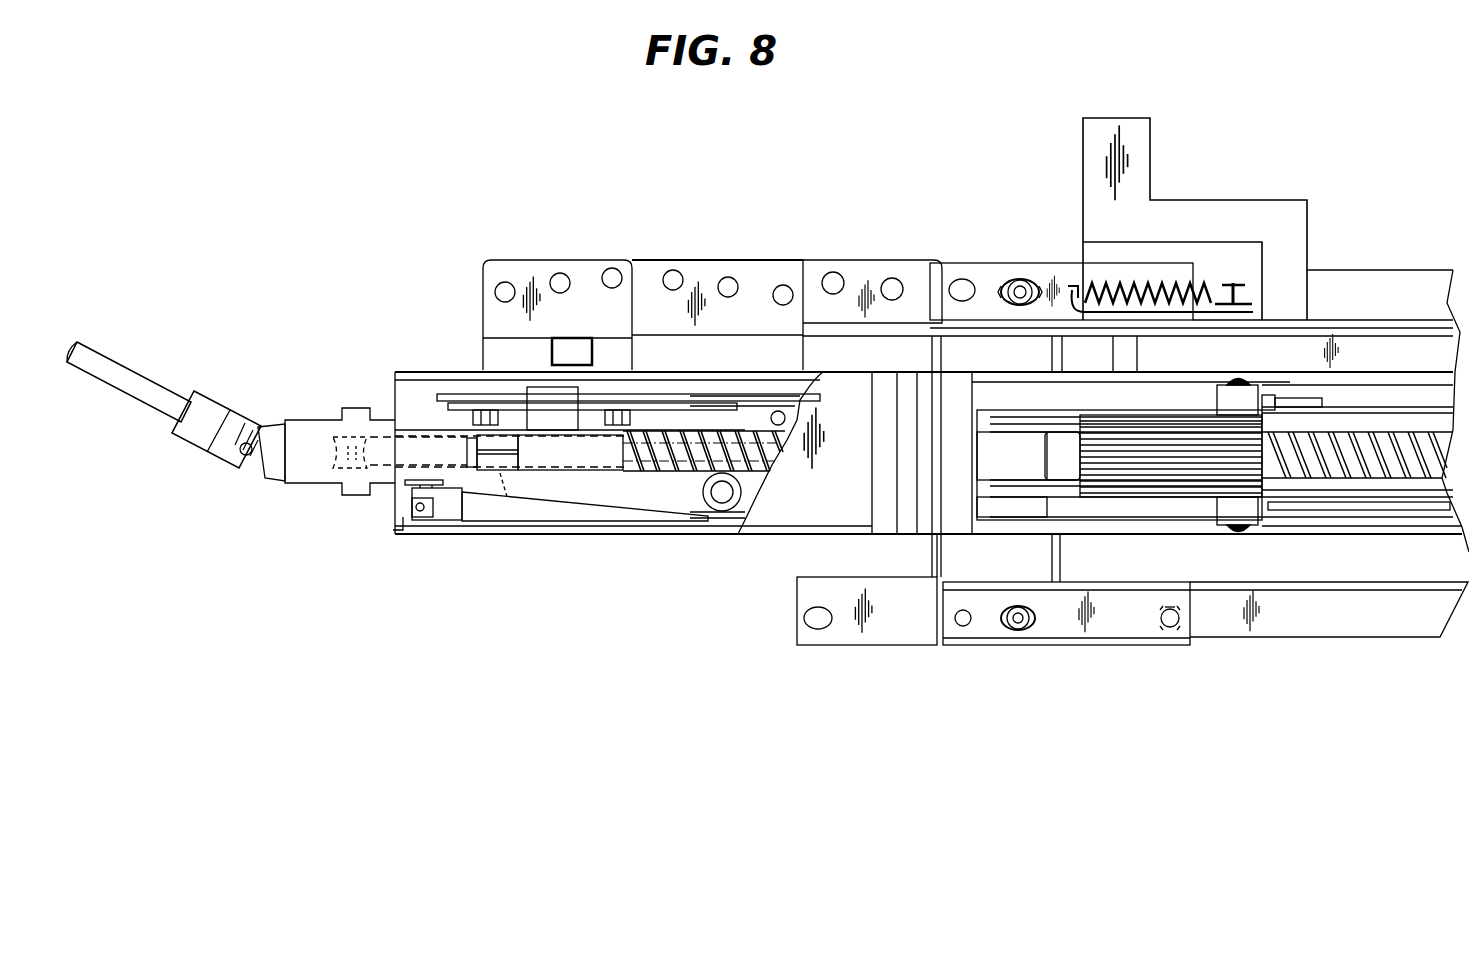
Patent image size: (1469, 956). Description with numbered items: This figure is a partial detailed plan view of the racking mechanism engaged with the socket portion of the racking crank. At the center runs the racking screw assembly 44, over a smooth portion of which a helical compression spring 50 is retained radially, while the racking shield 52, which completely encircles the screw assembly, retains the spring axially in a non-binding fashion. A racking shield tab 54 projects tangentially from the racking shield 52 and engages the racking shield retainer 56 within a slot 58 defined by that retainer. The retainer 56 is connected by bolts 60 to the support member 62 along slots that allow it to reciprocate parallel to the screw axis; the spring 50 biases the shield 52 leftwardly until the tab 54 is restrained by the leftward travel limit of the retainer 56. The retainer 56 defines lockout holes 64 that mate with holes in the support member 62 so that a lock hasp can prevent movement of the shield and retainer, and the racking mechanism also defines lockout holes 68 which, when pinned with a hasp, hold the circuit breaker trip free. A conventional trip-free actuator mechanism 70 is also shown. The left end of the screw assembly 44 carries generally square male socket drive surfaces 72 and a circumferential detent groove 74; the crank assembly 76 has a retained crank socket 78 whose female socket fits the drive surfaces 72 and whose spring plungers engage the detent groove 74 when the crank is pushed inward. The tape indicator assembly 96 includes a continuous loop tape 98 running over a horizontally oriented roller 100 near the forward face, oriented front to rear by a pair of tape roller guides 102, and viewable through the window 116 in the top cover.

The racking screw assembly 44 is at (1312, 498).
The helical compression spring 50 is at (646, 474).
The racking shield 52 is at (557, 464).
The racking shield tab 54 is at (570, 452).
The racking shield retainer 56 is at (486, 358).
The slot 58 is at (520, 407).
The bolts 60 is at (628, 412).
The support member 62 is at (637, 396).
The lockout holes 64 is at (612, 268).
The lockout holes 68 is at (728, 277).
The trip-free actuator mechanism 70 is at (1417, 102).
The male socket drive surfaces 72 is at (585, 497).
The detent groove 74 is at (337, 480).
The crank assembly 76 is at (176, 450).
The crank socket 78 is at (317, 463).
The tape indicator assembly 96 is at (458, 516).
The continuous loop tape 98 is at (648, 524).
The roller 100 is at (430, 527).
The tape roller guides 102 is at (708, 506).
The window 116 is at (397, 519).